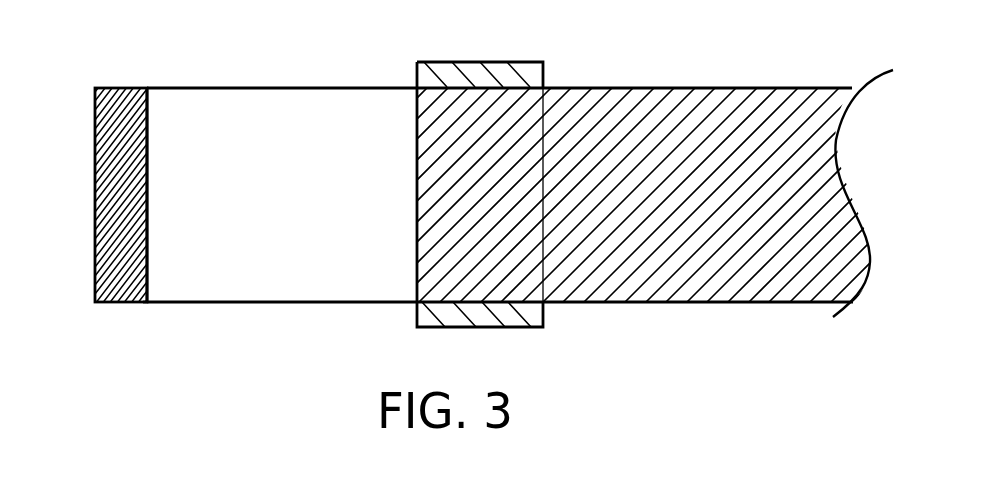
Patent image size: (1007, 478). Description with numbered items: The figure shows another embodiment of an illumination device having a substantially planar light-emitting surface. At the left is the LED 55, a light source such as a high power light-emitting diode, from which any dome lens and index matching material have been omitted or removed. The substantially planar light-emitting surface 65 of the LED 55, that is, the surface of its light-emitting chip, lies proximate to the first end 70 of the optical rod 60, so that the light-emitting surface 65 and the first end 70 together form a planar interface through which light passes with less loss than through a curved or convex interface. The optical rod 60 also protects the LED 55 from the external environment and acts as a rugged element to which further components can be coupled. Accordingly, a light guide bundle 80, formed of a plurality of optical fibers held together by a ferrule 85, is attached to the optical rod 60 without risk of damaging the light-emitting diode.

The LED 55 is at (92, 183).
The optical rod 60 is at (312, 85).
The substantially planar light-emitting surface 65 is at (143, 302).
The first end 70 is at (167, 100).
The light guide bundle 80 is at (740, 87).
The ferrule 85 is at (467, 62).